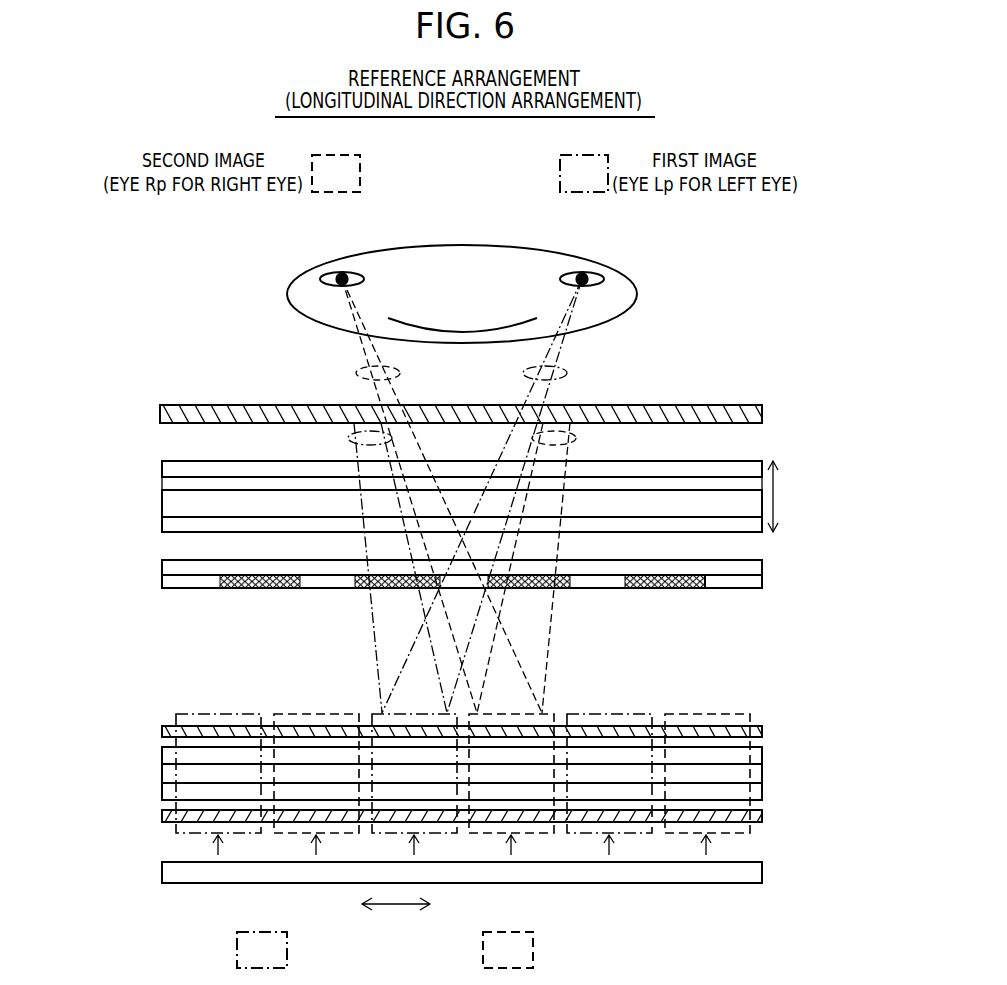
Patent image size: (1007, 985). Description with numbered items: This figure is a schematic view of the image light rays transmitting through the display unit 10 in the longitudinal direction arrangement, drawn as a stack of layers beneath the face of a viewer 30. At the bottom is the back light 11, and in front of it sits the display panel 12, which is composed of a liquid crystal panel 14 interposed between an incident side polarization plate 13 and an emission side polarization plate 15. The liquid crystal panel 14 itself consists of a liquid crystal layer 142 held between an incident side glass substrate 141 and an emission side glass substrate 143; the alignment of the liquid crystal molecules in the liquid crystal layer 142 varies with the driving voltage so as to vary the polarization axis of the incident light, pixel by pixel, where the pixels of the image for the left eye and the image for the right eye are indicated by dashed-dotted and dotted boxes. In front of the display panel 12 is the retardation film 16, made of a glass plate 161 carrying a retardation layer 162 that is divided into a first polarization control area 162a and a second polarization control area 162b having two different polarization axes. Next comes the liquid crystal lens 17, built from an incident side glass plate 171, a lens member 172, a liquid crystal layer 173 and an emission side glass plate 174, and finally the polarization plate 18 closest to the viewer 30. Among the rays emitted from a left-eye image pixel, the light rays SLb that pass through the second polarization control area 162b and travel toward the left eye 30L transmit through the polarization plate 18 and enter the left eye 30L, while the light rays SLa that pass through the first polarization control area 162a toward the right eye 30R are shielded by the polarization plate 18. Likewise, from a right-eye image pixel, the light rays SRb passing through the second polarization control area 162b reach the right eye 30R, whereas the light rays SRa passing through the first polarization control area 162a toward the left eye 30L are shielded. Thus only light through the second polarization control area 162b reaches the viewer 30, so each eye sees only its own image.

The display unit 10 is at (156, 360).
The back light 11 is at (162, 872).
The display panel 12 is at (400, 776).
The incident side polarization plate 13 is at (426, 818).
The liquid crystal panel 14 is at (421, 775).
The incident side glass substrate 141 is at (437, 795).
The liquid crystal layer 142 is at (162, 774).
The emission side glass substrate 143 is at (162, 754).
The emission side polarization plate 15 is at (162, 731).
The retardation film 16 is at (412, 620).
The glass plate 161 is at (162, 564).
The retardation layer 162 is at (433, 631).
The first polarization control area 162a is at (700, 589).
The second polarization control area 162b is at (745, 589).
The liquid crystal lens 17 is at (409, 491).
The incident side glass plate 171 is at (431, 532).
The lens member 172 is at (162, 507).
The liquid crystal layer 173 is at (162, 483).
The emission side glass plate 174 is at (162, 465).
The polarization plate 18 is at (160, 413).
The viewer 30 is at (637, 294).
The right eye 30R is at (342, 272).
The left eye 30L is at (582, 272).
The light rays SRa is at (576, 438).
The light rays SRb is at (356, 373).
The light rays SLa is at (348, 438).
The light rays SLb is at (567, 373).